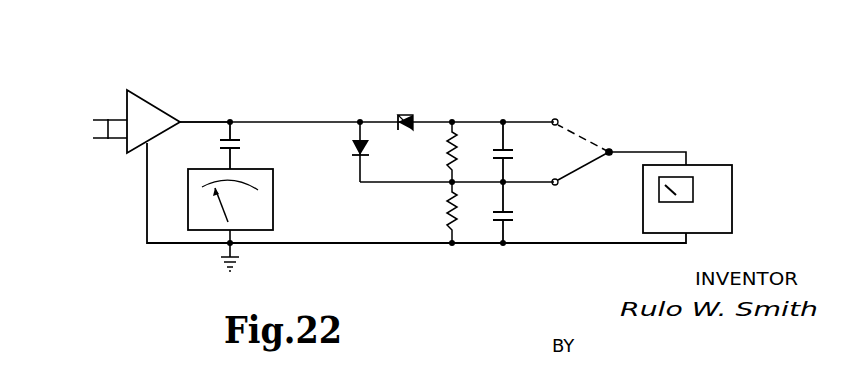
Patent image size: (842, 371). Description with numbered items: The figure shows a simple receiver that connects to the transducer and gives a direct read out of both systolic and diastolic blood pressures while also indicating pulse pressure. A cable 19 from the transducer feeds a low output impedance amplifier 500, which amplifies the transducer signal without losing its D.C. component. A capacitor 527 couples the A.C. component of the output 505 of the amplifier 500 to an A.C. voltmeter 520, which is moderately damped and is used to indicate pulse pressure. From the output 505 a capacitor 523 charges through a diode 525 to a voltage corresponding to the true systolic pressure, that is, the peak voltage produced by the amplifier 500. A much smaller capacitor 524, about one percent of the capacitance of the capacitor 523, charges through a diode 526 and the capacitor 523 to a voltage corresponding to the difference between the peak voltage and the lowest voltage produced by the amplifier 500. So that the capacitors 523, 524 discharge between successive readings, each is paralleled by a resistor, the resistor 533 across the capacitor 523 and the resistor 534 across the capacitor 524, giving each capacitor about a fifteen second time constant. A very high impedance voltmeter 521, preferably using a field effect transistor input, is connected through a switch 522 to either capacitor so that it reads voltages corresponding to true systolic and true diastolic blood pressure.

The cable 19 is at (104, 120).
The low output impedance amplifier 500 is at (148, 117).
The output of amplifier 505 is at (181, 121).
The capacitor 527 is at (242, 143).
The A.C. voltmeter 520 is at (274, 211).
The diode 525 is at (351, 146).
The diode 526 is at (405, 113).
The resistor 534 is at (446, 152).
The resistor 533 is at (446, 212).
The capacitor 524 is at (513, 150).
The capacitor 523 is at (512, 210).
The switch 522 is at (582, 133).
The very high impedance voltmeter 521 is at (739, 188).